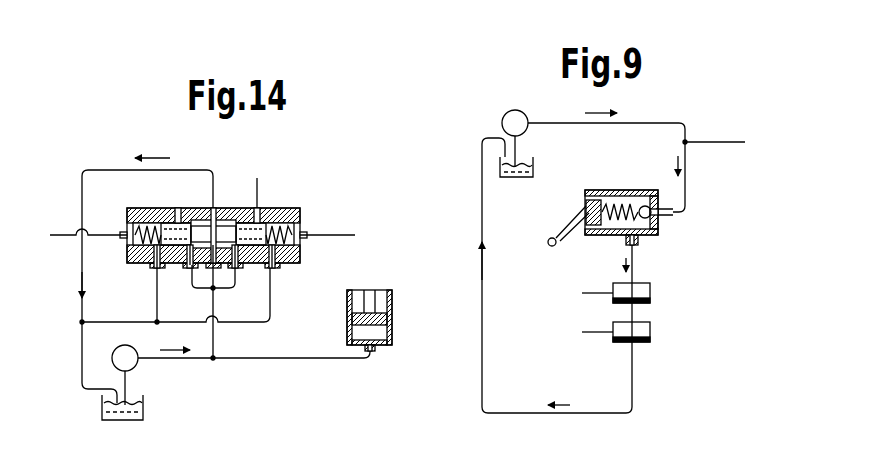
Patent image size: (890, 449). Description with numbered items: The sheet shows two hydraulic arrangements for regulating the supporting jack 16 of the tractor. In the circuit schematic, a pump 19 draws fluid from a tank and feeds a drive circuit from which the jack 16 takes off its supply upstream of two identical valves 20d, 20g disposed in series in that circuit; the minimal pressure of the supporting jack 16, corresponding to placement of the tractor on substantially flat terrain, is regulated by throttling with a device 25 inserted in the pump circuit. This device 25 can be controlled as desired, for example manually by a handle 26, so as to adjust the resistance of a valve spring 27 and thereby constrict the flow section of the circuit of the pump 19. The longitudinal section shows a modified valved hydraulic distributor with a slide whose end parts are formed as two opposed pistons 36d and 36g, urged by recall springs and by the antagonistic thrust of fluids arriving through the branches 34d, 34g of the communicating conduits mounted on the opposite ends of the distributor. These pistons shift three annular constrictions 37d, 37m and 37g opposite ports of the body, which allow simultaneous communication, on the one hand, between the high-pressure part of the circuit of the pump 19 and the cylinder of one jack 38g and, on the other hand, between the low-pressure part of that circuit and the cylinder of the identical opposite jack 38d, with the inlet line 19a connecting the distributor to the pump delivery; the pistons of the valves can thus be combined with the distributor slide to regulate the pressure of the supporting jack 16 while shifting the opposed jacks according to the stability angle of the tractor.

In FIG. 14, the branch 34g is at (60, 235).
In FIG. 14, the piston 36g is at (150, 222).
In FIG. 14, the jack 38g is at (178, 208).
In FIG. 14, the inlet line 19a is at (214, 195).
In FIG. 14, the annular constriction 37m is at (226, 208).
In FIG. 14, the jack 38d is at (260, 194).
In FIG. 14, the piston 36d is at (304, 222).
In FIG. 14, the branch 34d is at (335, 237).
In FIG. 14, the annular constriction 37g is at (173, 265).
In FIG. 14, the annular constriction 37d is at (250, 265).
In FIG. 14, the supporting jack 16 is at (344, 319).
In FIG. 14, the pump 19 is at (131, 365).
In FIG. 9, the pump 19 is at (515, 110).
In FIG. 9, the device 25 is at (592, 197).
In FIG. 9, the valve spring 27 is at (642, 195).
In FIG. 9, the handle 26 is at (549, 242).
In FIG. 9, the valve 20d is at (652, 295).
In FIG. 9, the valve 20g is at (652, 334).